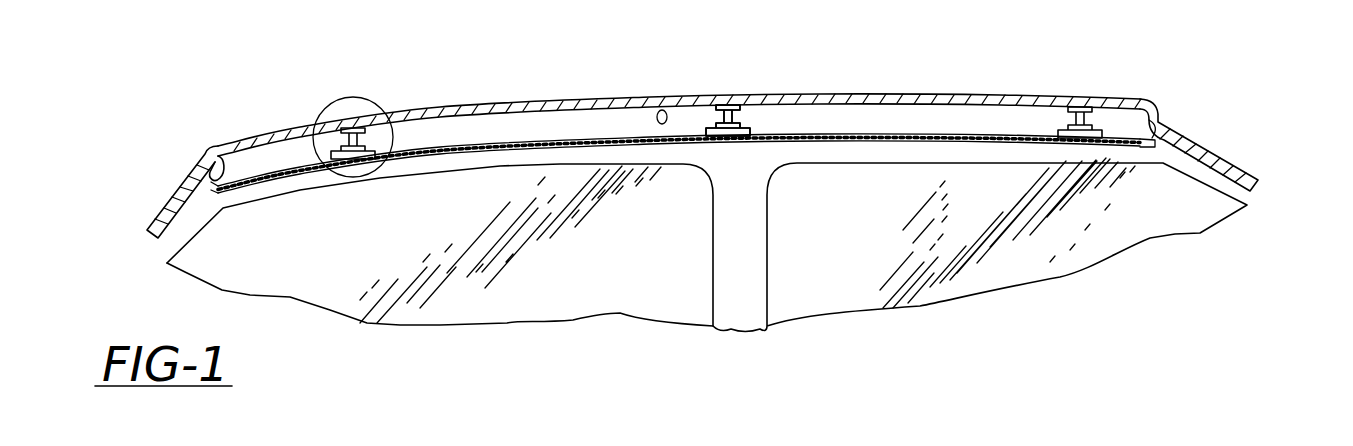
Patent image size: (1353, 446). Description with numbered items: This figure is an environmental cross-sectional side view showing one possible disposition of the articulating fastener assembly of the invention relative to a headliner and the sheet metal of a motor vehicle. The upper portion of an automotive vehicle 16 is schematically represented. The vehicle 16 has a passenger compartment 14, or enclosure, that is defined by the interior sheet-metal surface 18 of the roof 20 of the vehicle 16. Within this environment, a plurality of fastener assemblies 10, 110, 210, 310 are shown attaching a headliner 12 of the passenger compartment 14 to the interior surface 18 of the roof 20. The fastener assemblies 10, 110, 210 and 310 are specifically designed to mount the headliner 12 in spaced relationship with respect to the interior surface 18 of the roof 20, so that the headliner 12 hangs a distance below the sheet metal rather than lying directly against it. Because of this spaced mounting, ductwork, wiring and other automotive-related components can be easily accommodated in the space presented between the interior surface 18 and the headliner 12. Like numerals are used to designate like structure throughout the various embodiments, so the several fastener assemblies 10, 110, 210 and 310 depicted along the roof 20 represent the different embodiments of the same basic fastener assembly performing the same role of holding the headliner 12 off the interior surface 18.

The fastener assembly 10 is at (408, 136).
The fastener assembly 110 is at (632, 121).
The fastener assembly 210 is at (836, 122).
The fastener assembly 310 is at (688, 121).
The headliner 12 is at (837, 141).
The passenger compartment 14 is at (1166, 220).
The automotive vehicle 16 is at (1222, 62).
The interior sheet-metal surface 18 is at (967, 100).
The roof 20 is at (499, 100).